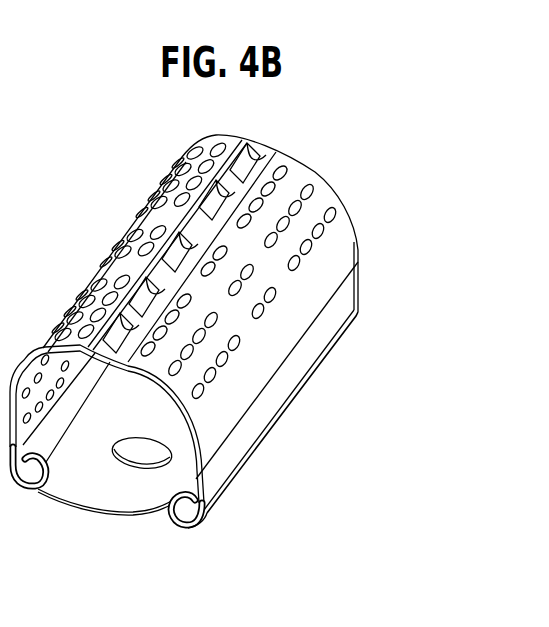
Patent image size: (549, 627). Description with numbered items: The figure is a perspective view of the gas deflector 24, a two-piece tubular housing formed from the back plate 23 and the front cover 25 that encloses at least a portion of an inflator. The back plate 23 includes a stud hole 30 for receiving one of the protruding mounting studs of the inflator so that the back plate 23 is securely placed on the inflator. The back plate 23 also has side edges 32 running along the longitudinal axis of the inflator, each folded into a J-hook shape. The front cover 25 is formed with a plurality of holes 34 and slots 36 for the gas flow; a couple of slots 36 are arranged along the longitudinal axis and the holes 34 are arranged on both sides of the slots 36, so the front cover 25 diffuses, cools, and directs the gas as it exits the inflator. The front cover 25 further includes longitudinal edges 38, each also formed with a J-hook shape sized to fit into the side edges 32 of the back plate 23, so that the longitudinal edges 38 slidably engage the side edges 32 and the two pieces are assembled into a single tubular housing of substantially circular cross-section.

The gas deflector 24 is at (357, 166).
The front cover 25 is at (345, 249).
The holes 34 is at (90, 275).
The slot 36 is at (250, 150).
The side edges 32 is at (212, 507).
The longitudinal edges 38 is at (176, 532).
The back plate 23 is at (73, 475).
The stud hole 30 is at (138, 458).